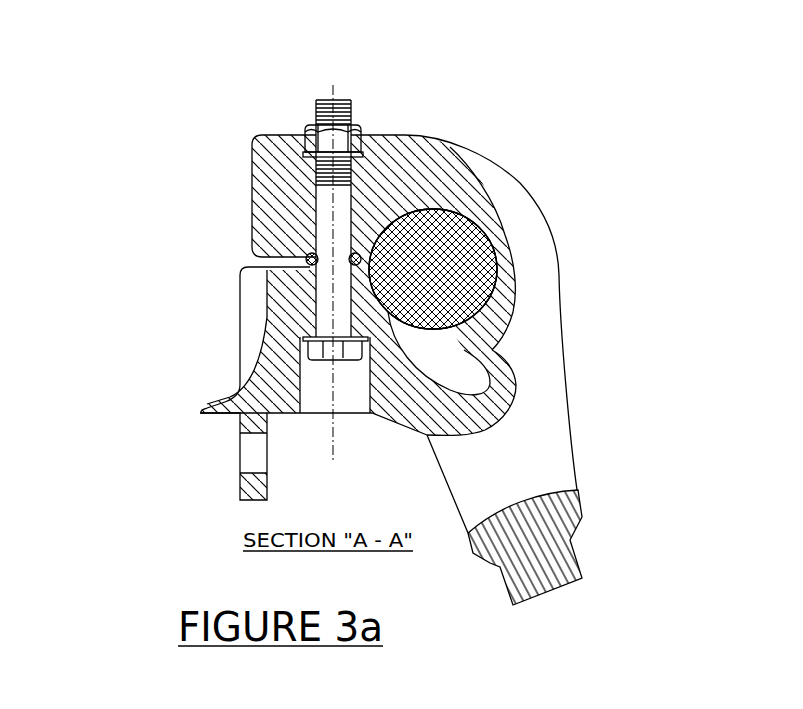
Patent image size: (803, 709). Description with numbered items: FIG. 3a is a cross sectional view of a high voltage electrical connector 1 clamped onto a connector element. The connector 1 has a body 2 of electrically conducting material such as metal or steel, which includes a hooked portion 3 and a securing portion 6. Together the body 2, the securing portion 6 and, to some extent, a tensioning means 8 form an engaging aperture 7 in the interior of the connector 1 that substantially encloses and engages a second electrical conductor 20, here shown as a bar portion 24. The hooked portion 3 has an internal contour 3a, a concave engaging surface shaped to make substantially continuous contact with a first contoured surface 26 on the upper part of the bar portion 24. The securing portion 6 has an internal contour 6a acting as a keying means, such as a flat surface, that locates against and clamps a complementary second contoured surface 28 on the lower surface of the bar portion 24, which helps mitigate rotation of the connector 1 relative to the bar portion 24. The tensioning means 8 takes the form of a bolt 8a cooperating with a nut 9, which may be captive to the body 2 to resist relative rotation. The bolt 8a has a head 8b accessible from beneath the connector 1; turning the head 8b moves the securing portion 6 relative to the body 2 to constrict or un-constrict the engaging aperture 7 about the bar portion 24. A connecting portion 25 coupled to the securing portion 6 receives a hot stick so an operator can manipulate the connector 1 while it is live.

The high voltage electrical connector 1 is at (492, 137).
The body 2 is at (427, 135).
The hooked portion 3 is at (490, 213).
The internal contour 3a is at (390, 200).
The securing portion 6 is at (410, 420).
The internal contour 6a is at (405, 303).
The engaging aperture 7 is at (368, 247).
The tensioning means 8 is at (327, 258).
The bolt 8a is at (327, 100).
The head 8b is at (340, 357).
The nut 9 is at (310, 127).
The bar portion 24 is at (500, 238).
The second electrical conductor 20 is at (500, 238).
The first contoured surface 26 is at (500, 238).
The connecting portion 25 is at (242, 443).
The second contoured surface 28 is at (477, 395).